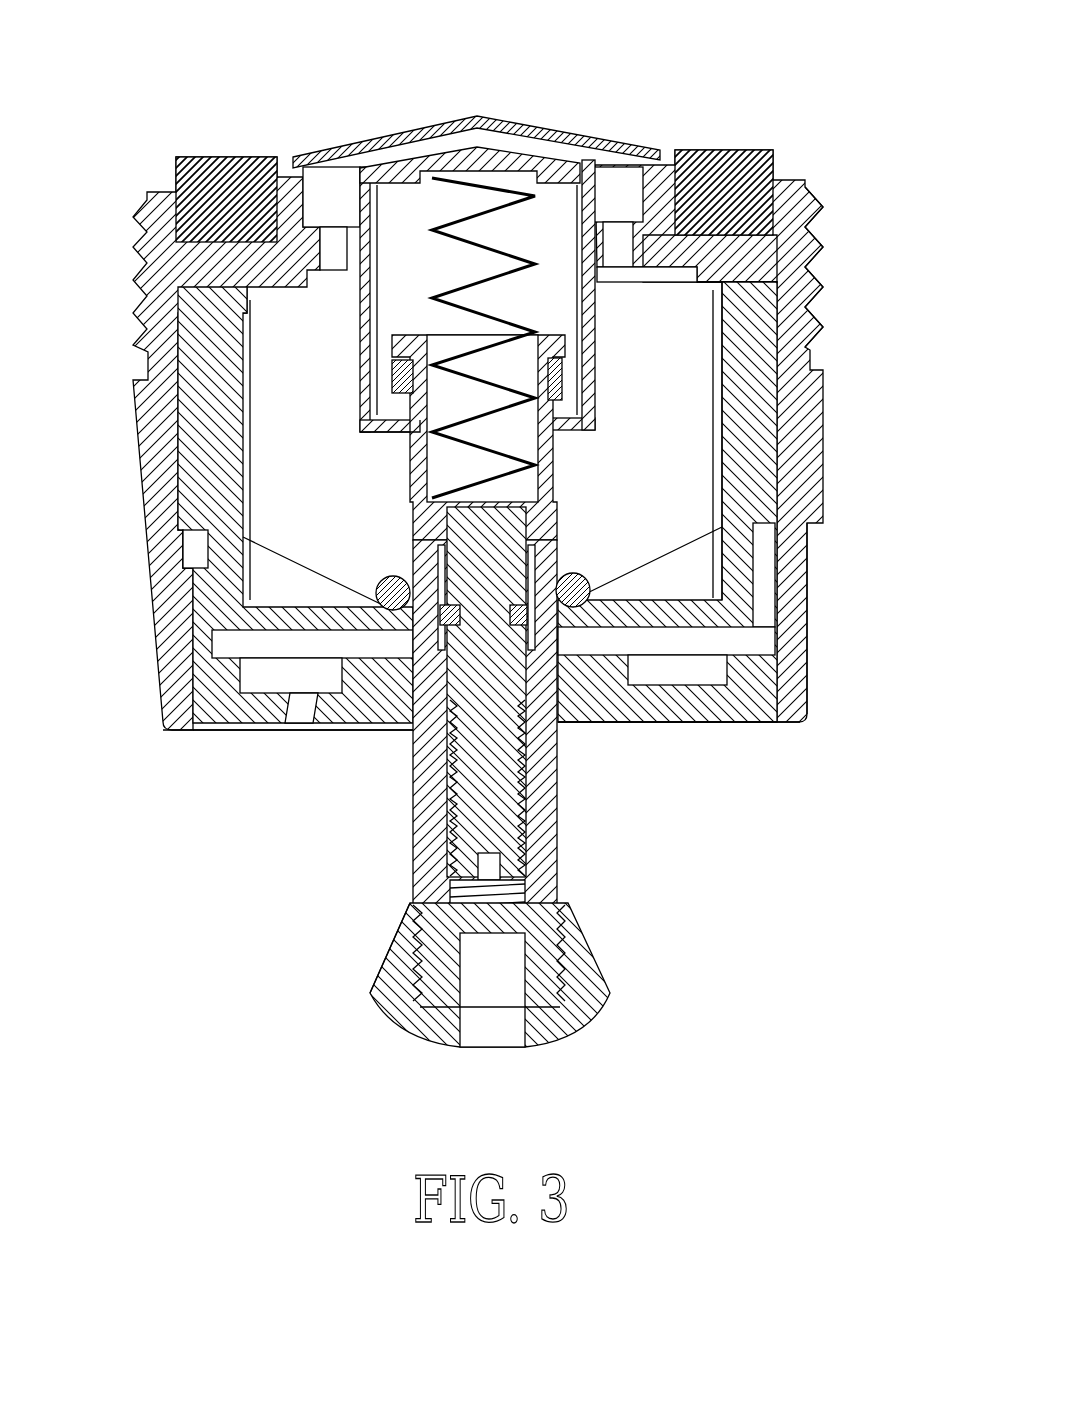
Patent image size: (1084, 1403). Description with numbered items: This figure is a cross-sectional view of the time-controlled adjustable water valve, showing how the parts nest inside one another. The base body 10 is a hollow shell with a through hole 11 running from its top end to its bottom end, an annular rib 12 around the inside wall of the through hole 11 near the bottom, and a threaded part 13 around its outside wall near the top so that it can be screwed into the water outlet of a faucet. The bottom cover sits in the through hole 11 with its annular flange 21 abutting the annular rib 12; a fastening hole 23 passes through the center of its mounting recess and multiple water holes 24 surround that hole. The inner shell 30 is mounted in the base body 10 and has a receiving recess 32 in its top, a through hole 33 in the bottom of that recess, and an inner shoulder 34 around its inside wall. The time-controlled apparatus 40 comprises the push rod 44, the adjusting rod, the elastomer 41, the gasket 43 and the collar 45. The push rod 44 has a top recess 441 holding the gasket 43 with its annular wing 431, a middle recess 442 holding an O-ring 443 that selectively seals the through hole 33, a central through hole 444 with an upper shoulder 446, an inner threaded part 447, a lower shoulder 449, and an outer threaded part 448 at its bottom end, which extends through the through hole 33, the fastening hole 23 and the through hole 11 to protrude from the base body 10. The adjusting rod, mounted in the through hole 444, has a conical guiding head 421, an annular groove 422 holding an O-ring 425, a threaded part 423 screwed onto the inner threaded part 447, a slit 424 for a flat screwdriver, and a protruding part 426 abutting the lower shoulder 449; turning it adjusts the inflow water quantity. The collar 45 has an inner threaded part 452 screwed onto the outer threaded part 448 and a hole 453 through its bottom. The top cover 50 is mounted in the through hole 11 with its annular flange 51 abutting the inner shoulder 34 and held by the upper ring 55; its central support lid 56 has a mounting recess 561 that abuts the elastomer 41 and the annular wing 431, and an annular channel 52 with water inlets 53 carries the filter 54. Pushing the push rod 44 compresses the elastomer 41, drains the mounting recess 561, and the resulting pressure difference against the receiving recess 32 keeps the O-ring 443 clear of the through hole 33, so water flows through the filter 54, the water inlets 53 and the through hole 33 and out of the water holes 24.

The base body 10 is at (795, 545).
The through hole 11 is at (778, 420).
The annular rib 12 is at (808, 565).
The threaded part 13 is at (823, 300).
The annular flange 21 is at (213, 660).
The fastening hole 23 is at (395, 700).
The water holes 24 is at (690, 705).
The inner shell 30 is at (755, 355).
The receiving recess 32 is at (722, 445).
The through hole 33 is at (676, 702).
The inner shoulder 34 is at (745, 268).
The time-controlled apparatus 40 is at (345, 432).
The elastomer 41 is at (455, 205).
The conical guiding head 421 is at (463, 532).
The annular groove 422 is at (548, 535).
The threaded part 423 is at (455, 890).
The slit 424 is at (480, 858).
The O-ring 425 is at (518, 600).
The protruding part 426 is at (558, 700).
The gasket 43 is at (570, 363).
The annular wing 431 is at (575, 383).
The push rod 44 is at (523, 845).
The top recess 441 is at (412, 432).
The middle recess 442 is at (393, 580).
The O-ring 443 is at (580, 580).
The through hole 444 is at (412, 678).
The upper shoulder 446 is at (530, 480).
The inner threaded part 447 is at (520, 912).
The outer threaded part 448 is at (562, 1003).
The lower shoulder 449 is at (410, 725).
The collar 45 is at (597, 995).
The inner threaded part 452 is at (412, 958).
The hole 453 is at (520, 1028).
The top cover 50 is at (225, 270).
The annular flange 51 is at (727, 255).
The annular channel 52 is at (335, 240).
The water inlets 53 is at (300, 220).
The filter 54 is at (390, 135).
The upper ring 55 is at (740, 175).
The support lid 56 is at (613, 165).
The mounting recess 561 is at (565, 172).